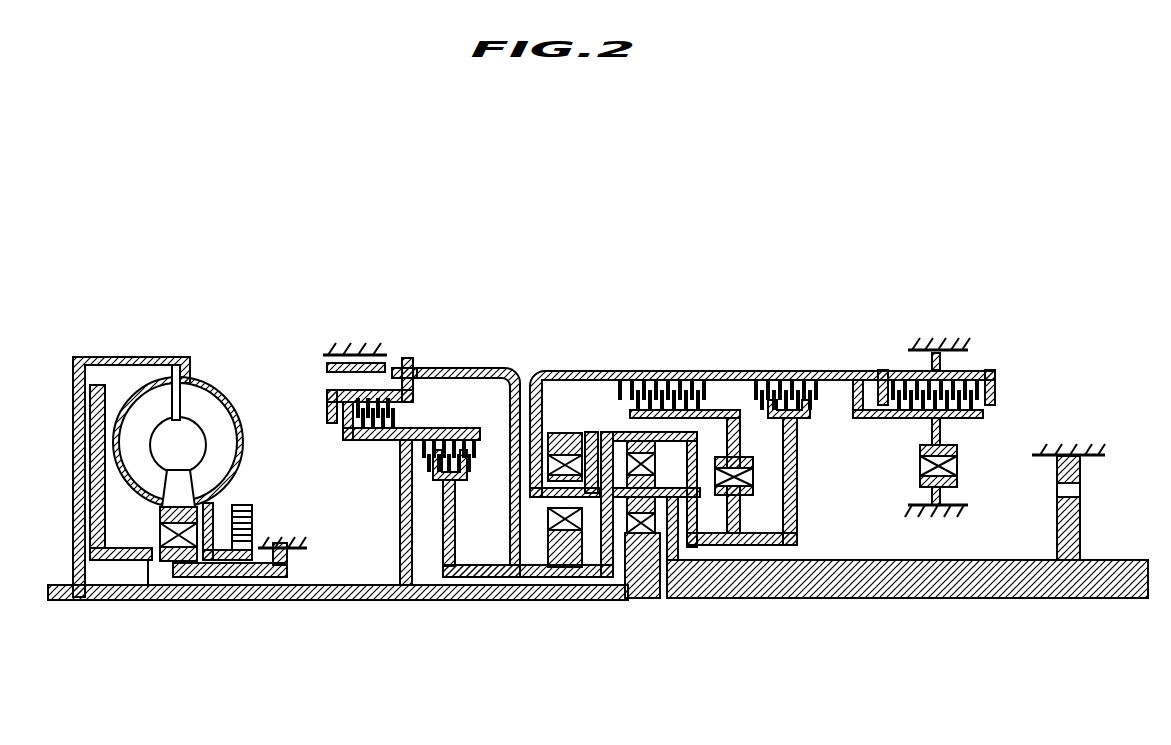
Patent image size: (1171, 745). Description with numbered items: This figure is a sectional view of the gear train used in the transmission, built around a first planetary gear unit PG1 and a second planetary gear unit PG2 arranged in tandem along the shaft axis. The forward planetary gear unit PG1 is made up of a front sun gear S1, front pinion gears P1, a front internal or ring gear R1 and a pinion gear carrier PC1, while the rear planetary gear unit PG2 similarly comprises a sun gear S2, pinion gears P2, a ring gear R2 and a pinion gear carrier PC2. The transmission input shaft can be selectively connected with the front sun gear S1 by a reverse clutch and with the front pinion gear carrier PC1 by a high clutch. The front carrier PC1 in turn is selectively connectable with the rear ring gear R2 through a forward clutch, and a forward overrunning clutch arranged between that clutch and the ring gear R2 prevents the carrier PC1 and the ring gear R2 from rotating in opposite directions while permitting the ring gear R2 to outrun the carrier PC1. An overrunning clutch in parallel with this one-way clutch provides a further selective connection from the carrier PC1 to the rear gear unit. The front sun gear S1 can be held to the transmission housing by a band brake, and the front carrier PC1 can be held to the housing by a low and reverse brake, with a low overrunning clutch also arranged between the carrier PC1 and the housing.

The first planetary gear unit PG1 is at (513, 470).
The second planetary gear unit PG2 is at (676, 482).
The front ring gear R1 is at (566, 432).
The rear ring gear R2 is at (637, 440).
The front sun gear S1 is at (556, 520).
The rear sun gear S2 is at (642, 550).
The front pinion gears P1 is at (577, 516).
The rear pinion gears P2 is at (681, 508).
The front pinion gear carrier PC1 is at (607, 600).
The rear pinion gear carrier PC2 is at (695, 540).